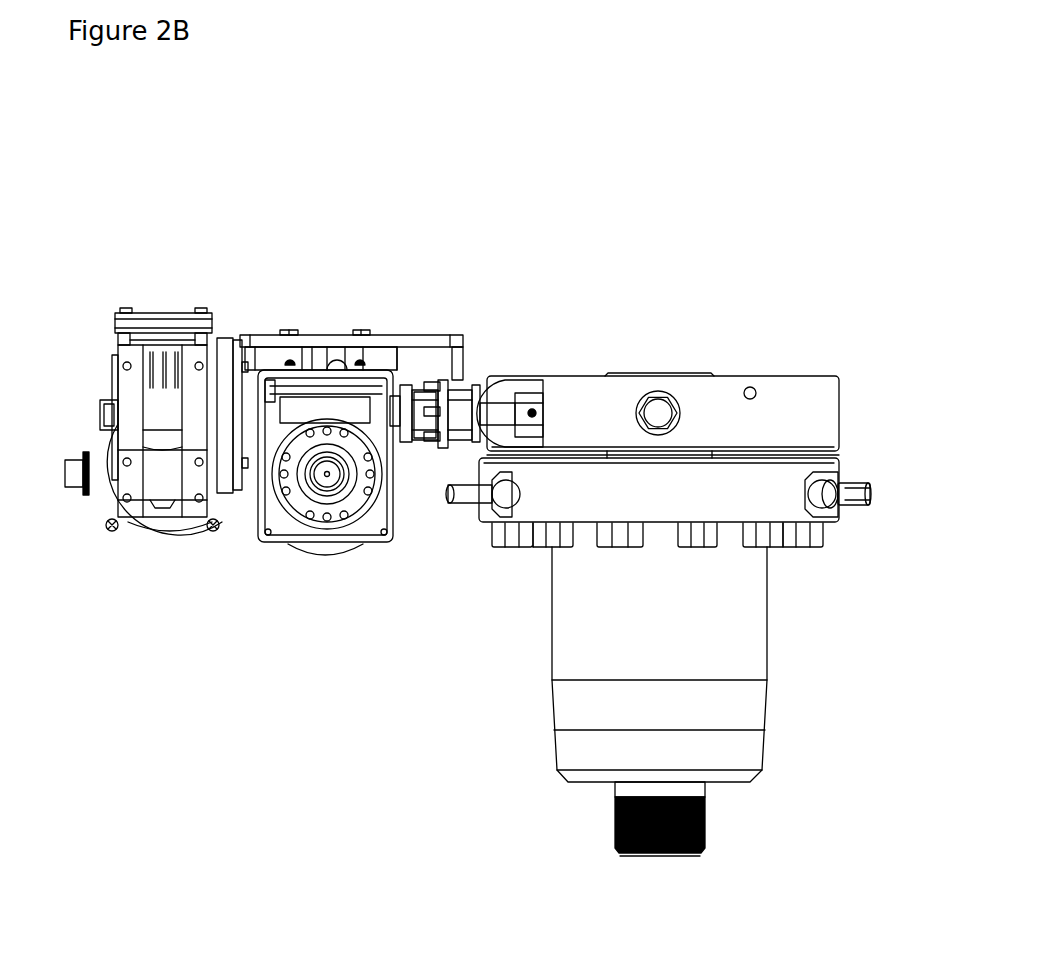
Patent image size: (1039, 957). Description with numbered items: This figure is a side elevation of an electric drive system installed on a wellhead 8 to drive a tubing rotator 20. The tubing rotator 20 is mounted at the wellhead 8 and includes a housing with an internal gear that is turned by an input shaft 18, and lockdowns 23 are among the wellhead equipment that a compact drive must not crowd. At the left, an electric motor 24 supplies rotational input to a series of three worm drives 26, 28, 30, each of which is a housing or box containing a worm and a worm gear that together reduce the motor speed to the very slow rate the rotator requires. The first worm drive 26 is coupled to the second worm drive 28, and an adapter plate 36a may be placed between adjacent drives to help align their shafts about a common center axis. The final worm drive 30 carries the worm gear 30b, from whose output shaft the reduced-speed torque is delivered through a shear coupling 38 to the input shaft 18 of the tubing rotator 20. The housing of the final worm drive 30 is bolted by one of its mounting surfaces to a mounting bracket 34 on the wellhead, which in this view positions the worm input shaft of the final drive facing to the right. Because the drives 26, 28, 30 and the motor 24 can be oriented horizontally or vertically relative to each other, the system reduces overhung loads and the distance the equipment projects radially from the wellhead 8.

The wellhead 8 is at (752, 590).
The input shaft 18 is at (498, 413).
The tubing rotator 20 is at (822, 417).
The lockdowns 23 is at (873, 487).
The electric motor 24 is at (167, 553).
The worm drive 26 is at (100, 400).
The worm drive 28 is at (325, 548).
The worm drive 30 is at (280, 350).
The worm gear 30b is at (418, 415).
The mounting bracket 34 is at (330, 335).
The adapter plate 36a is at (222, 490).
The shear coupling 38 is at (462, 413).